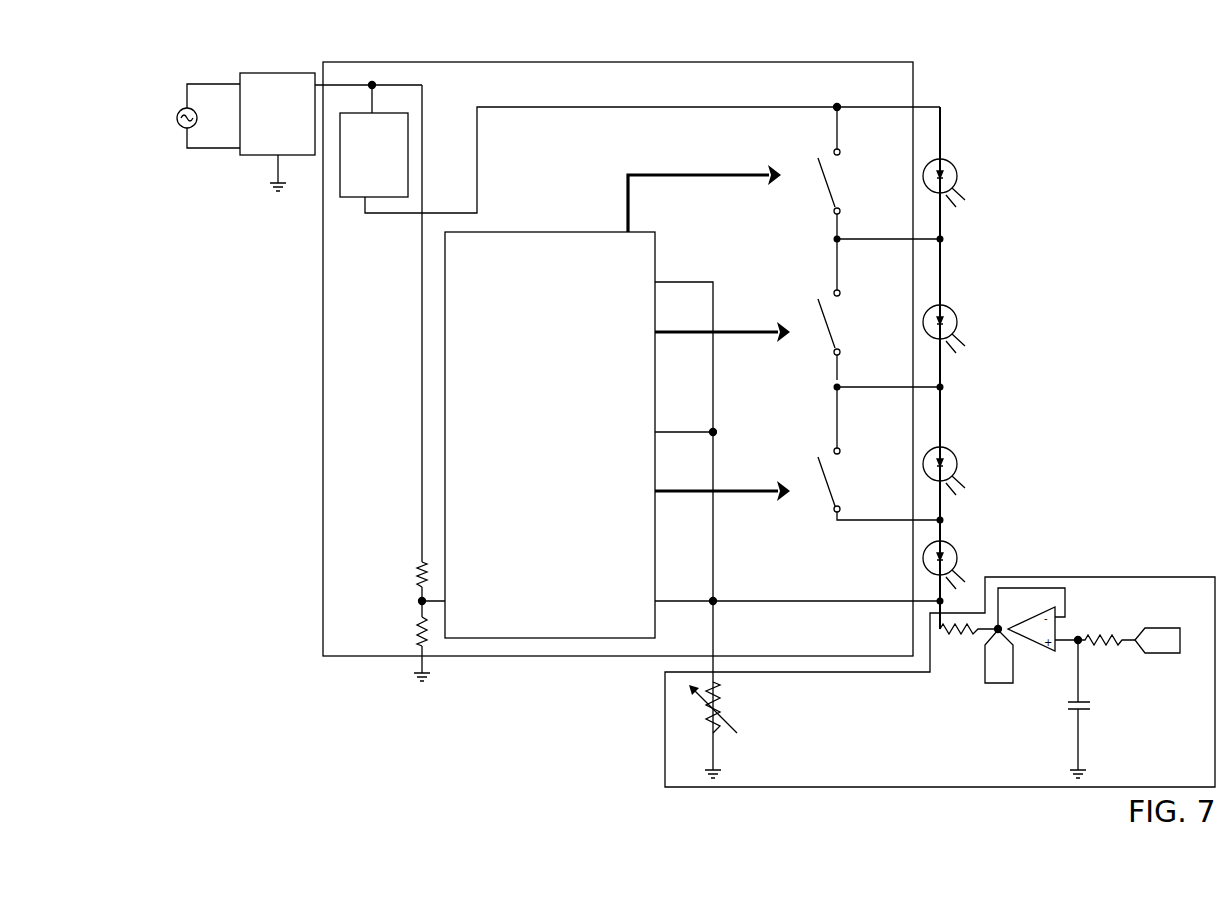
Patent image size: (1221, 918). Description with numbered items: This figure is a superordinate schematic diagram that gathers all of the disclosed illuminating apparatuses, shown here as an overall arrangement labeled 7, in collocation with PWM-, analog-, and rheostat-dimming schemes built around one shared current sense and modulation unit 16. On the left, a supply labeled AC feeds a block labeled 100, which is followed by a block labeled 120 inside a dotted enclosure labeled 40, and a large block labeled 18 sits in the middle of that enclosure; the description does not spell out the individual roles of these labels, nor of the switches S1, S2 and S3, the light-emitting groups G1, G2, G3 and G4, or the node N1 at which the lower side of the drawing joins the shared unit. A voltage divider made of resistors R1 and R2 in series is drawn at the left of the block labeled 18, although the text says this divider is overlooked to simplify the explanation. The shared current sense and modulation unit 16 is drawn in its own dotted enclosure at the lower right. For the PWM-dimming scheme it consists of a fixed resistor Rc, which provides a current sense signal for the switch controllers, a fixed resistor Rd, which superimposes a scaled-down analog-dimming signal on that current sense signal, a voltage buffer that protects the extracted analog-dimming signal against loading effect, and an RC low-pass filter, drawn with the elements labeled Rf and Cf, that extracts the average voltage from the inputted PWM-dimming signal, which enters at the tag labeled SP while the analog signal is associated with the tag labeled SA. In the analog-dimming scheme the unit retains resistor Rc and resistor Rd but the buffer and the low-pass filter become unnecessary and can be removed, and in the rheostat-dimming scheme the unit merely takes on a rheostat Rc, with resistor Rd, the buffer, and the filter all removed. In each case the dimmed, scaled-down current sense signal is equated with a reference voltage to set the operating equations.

The lighting system 7 is at (193, 69).
The AC power source AC is at (208, 116).
The power converter 100 is at (294, 124).
The power supply unit 120 is at (389, 167).
The lighting device 40 is at (913, 70).
The controller 18 is at (550, 435).
The shared current sense and modulation unit 16 is at (1120, 577).
The first switch S1 is at (879, 173).
The second switch S2 is at (879, 313).
The third switch S3 is at (879, 453).
The first LED group G1 is at (959, 183).
The second LED group G2 is at (959, 329).
The third LED group G3 is at (959, 471).
The fourth LED group G4 is at (959, 565).
The node N1 is at (797, 526).
The resistor R1 is at (413, 581).
The resistor R2 is at (406, 641).
The fixed resistor (rheostat) Rc is at (728, 730).
The fixed resistor Rd is at (969, 643).
The filter resistor Rf is at (1106, 628).
The filter capacitor Cf is at (1090, 709).
The analog feedback signal SA is at (999, 656).
The PWM control signal SP is at (1157, 640).